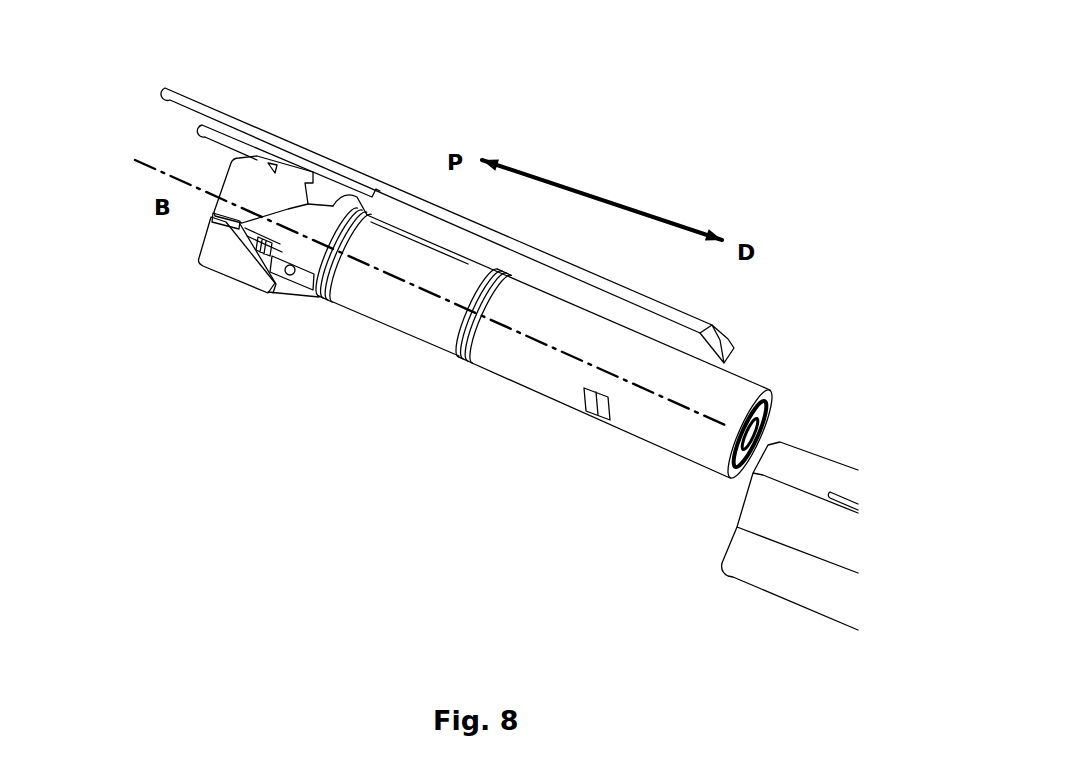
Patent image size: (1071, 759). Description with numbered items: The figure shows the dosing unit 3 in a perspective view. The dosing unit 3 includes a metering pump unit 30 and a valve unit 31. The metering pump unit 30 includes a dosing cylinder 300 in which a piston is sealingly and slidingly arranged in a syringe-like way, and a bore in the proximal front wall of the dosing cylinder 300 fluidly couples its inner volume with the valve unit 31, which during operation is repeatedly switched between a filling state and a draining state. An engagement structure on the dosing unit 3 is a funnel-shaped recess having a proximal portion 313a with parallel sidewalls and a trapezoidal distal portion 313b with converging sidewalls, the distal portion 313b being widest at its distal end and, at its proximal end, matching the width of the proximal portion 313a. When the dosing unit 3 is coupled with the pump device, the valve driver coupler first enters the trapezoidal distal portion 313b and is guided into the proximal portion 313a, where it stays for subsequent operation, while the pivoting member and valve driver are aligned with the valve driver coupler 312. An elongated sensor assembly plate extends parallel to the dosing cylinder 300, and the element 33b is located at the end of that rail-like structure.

The dosing unit 3 is at (653, 183).
The metering pump unit 30 is at (542, 363).
The dosing cylinder 300 is at (524, 338).
The valve unit 31 is at (317, 213).
The valve driver coupler 312 is at (222, 258).
The proximal portion 313a is at (224, 221).
The trapezoidal distal portion 313b is at (272, 227).
The rail end stop 33b is at (725, 333).